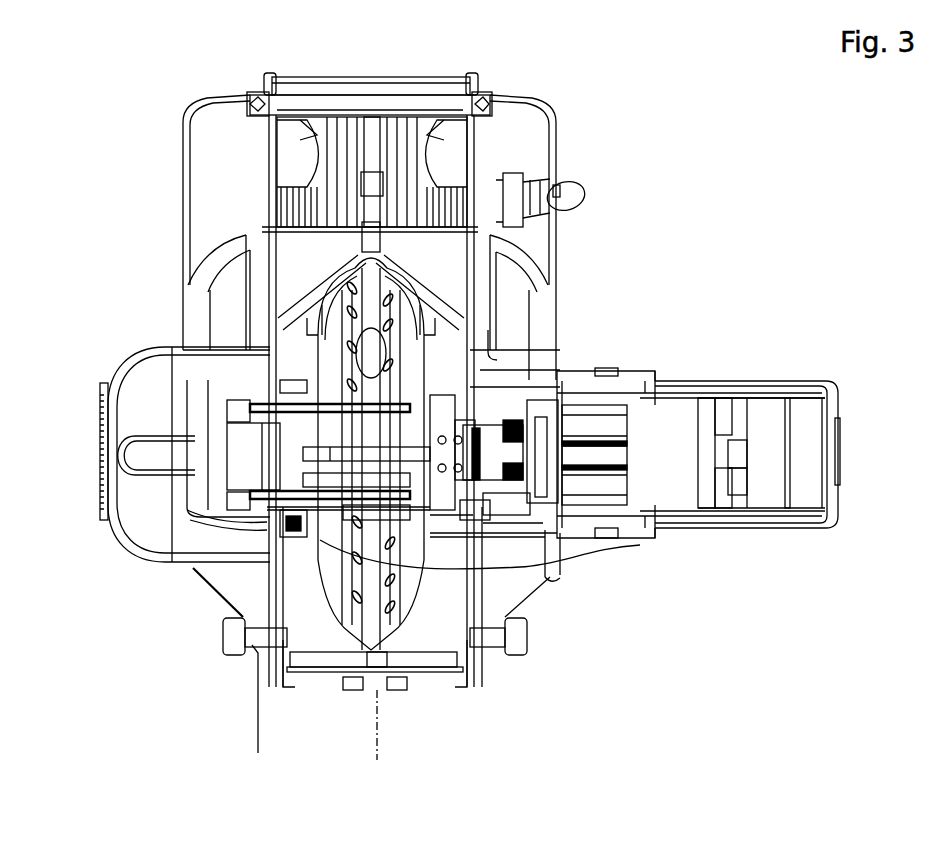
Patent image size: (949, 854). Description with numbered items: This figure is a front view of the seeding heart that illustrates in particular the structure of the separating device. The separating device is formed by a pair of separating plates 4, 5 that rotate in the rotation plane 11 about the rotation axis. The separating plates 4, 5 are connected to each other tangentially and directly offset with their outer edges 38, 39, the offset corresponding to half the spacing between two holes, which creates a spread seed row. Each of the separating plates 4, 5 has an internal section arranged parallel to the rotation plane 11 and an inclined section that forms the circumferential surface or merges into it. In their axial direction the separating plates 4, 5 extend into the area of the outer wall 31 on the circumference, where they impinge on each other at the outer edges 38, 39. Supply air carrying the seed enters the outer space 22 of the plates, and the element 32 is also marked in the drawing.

The separating plate 4 is at (553, 578).
The separating plate 5 is at (318, 312).
The rotation plane 11 is at (380, 722).
The outer space of the plates 22 is at (450, 592).
The outer wall 31 is at (557, 537).
The partition wall 32 is at (320, 540).
The outer edge 38 is at (560, 540).
The outer edge 39 is at (247, 647).